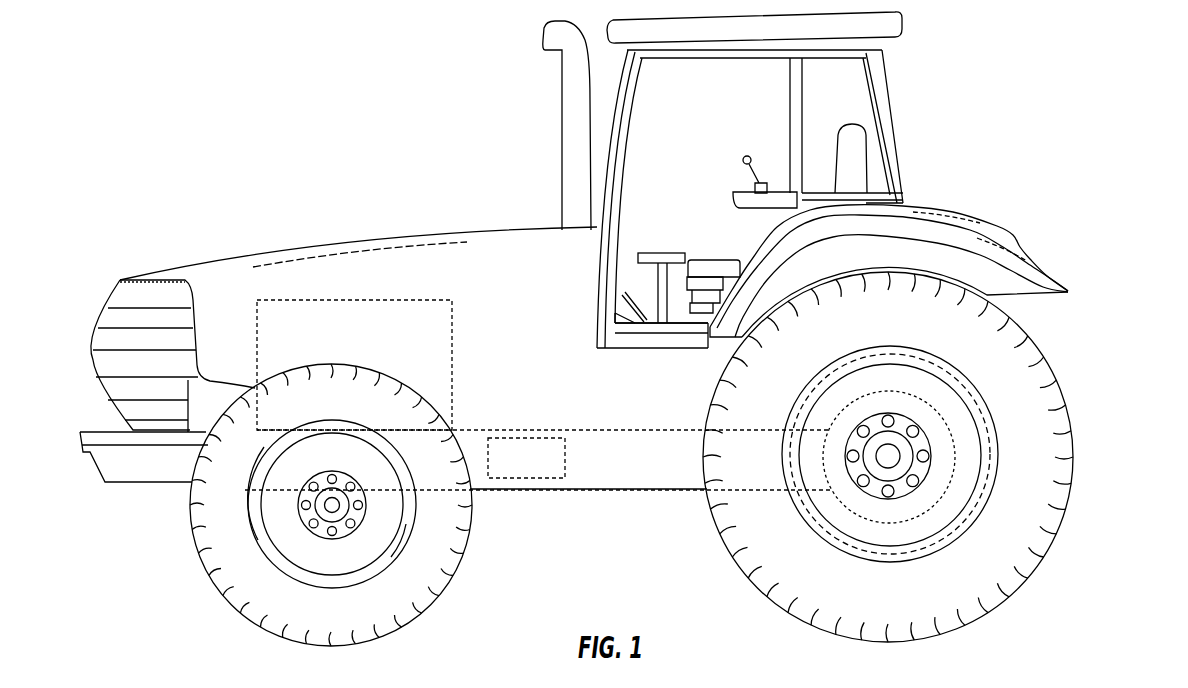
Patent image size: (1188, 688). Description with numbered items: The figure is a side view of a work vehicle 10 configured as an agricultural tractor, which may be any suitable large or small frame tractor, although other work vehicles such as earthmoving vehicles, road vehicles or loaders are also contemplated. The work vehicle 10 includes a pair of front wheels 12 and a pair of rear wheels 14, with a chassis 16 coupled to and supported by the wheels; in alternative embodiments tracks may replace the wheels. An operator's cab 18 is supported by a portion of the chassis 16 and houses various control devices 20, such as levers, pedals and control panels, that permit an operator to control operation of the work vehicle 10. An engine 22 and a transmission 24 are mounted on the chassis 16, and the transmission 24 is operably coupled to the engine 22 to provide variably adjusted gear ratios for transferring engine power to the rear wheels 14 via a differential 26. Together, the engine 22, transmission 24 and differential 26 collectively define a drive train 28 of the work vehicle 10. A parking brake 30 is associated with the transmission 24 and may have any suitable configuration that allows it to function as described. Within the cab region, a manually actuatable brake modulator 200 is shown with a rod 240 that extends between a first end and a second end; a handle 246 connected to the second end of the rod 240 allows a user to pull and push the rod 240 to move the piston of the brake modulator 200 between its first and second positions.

The work vehicle 10 is at (245, 92).
The front wheels 12 is at (230, 612).
The rear wheels 14 is at (1057, 533).
The chassis 16 is at (608, 490).
The operator's cab 18 is at (887, 88).
The control devices 20 is at (743, 158).
The engine 22 is at (325, 300).
The transmission 24 is at (578, 427).
The differential 26 is at (937, 408).
The drive train 28 is at (503, 257).
The parking brake 30 is at (517, 478).
The brake modulator 200 is at (641, 240).
The rod 240 is at (652, 337).
The handle 246 is at (677, 253).